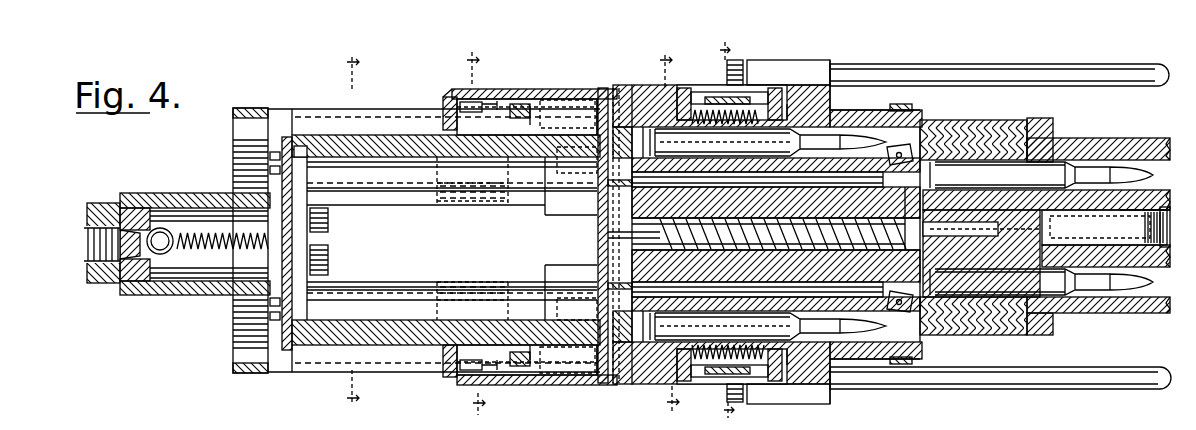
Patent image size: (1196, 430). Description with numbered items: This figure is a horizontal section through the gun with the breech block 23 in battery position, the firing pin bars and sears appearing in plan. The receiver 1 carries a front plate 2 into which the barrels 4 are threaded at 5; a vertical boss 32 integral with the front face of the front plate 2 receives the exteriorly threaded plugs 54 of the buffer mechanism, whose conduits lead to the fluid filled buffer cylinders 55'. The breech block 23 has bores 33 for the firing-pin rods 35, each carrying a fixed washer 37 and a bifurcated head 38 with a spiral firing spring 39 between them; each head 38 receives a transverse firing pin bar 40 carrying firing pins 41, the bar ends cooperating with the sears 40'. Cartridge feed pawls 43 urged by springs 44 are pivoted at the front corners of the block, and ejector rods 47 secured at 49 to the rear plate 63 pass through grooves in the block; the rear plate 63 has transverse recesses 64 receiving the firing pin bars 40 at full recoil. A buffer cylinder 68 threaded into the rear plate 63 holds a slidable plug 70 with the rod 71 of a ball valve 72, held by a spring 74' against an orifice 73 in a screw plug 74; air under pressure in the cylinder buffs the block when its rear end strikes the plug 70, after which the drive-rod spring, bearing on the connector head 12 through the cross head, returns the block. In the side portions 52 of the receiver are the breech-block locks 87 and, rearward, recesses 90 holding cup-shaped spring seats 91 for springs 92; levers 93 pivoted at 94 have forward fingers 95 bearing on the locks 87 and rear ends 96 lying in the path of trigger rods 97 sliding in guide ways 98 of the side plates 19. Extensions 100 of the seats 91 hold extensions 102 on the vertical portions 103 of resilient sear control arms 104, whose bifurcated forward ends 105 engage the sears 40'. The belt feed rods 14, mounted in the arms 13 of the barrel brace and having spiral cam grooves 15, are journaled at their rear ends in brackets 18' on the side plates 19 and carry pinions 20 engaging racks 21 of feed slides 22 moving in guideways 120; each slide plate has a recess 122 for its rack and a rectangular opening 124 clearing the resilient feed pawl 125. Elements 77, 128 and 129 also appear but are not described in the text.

The receiver 1 is at (410, 346).
The front plate 2 is at (1040, 335).
The barrels 4 is at (1145, 138).
The threaded connection 5 is at (990, 128).
The connector head 12 is at (352, 233).
The laterally extending arms 13 is at (474, 232).
The belt feed rods 14 is at (1040, 66).
The spiral cam groove 15 is at (728, 228).
The brackets 18' is at (767, 228).
The side plates 19 is at (560, 100).
The pinion 20 is at (736, 62).
The racks 21 is at (710, 92).
The feed slides 22 is at (683, 88).
The breech block 23 is at (597, 281).
The vertical boss 32 is at (1106, 256).
The bore 33 is at (776, 218).
The firing-pin rod 35 is at (600, 236).
The washer 37 is at (905, 215).
The bifurcated head 38 is at (600, 223).
The spiral firing spring 39 is at (726, 218).
The firing pin bar 40 is at (613, 243).
The sears 40' is at (626, 234).
The firing pins 41 is at (838, 187).
The cartridge feed pawls 43 is at (915, 137).
The springs 44 is at (895, 228).
The ejector rods 47 is at (452, 238).
The securing point 49 is at (452, 231).
The side portions 52 is at (400, 140).
The exteriorly threaded plugs 54 is at (1140, 224).
The buffer cylinders 55' is at (1145, 197).
The rear plate 63 is at (280, 352).
The transverse recesses 64 is at (328, 222).
The buffer cylinder 68 is at (178, 295).
The buffer plug 70 is at (328, 252).
The rod 71 is at (198, 206).
The ball valve 72 is at (168, 249).
The orifice 73 is at (143, 206).
The screw plug 74 is at (95, 255).
The spring 74' is at (222, 249).
The breech insert 77 is at (981, 253).
The breech-block locks 87 is at (545, 213).
The recesses 90 is at (440, 200).
The cup-shaped spring seat 91 is at (440, 177).
The spring 92 is at (472, 200).
The levers 93 is at (538, 104).
The pivot 94 is at (520, 104).
The fingers 95 is at (590, 89).
The rear ends 96 is at (443, 105).
The trigger rods 97 is at (278, 120).
The guide ways 98 is at (322, 116).
The extensions 100 is at (460, 100).
The extensions 102 is at (484, 100).
The vertical portions 103 is at (470, 100).
The sear control arms 104 is at (552, 100).
The forward ends 105 is at (606, 90).
The guideways 120 is at (831, 99).
The central vertical recess 122 is at (745, 108).
The rectangular opening 124 is at (775, 88).
The feed pawl 125 is at (712, 97).
The cartridge 128 is at (695, 137).
The feed guide 129 is at (790, 108).